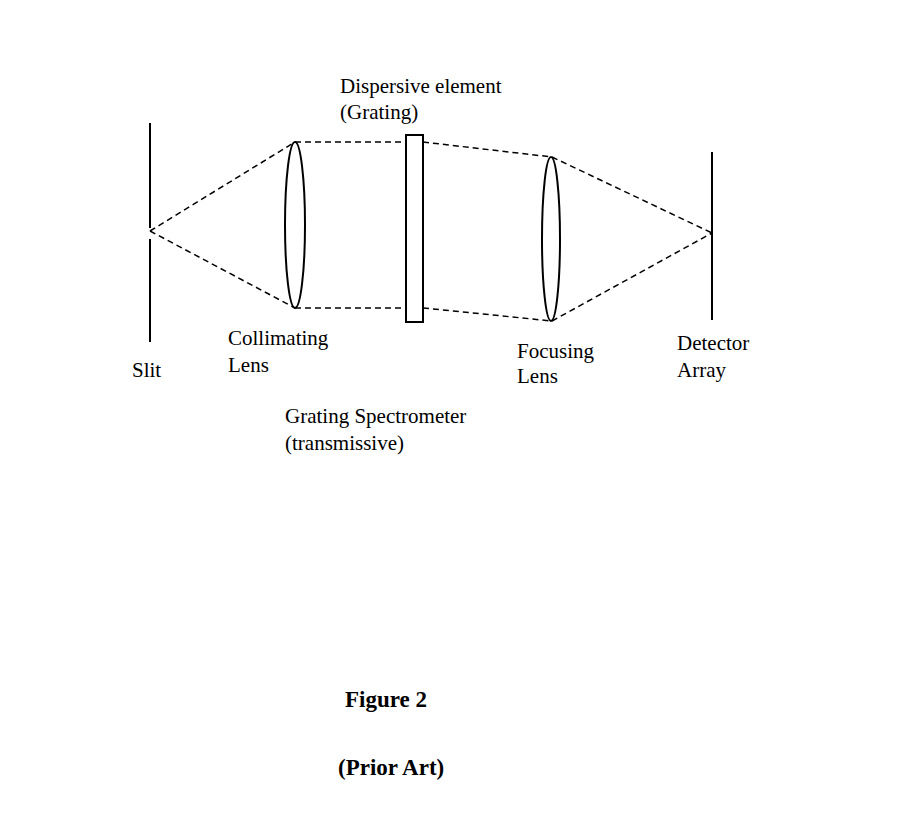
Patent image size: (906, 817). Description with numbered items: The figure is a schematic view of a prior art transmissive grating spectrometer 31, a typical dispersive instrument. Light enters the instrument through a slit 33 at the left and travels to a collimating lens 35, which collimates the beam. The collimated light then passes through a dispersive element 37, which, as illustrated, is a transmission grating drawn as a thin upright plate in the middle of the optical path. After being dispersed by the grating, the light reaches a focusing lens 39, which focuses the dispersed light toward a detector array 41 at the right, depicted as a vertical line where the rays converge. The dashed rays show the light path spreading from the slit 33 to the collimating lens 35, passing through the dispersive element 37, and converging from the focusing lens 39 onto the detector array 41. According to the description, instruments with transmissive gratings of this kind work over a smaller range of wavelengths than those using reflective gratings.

The spectrometer 31 is at (582, 80).
The slit 33 is at (150, 302).
The collimating lens 35 is at (287, 173).
The dispersive element 37 is at (425, 295).
The focusing lens 39 is at (560, 190).
The detector array 41 is at (712, 183).